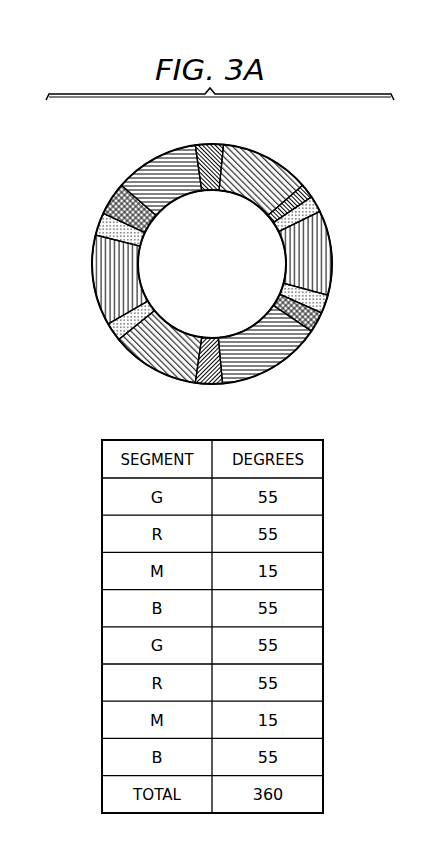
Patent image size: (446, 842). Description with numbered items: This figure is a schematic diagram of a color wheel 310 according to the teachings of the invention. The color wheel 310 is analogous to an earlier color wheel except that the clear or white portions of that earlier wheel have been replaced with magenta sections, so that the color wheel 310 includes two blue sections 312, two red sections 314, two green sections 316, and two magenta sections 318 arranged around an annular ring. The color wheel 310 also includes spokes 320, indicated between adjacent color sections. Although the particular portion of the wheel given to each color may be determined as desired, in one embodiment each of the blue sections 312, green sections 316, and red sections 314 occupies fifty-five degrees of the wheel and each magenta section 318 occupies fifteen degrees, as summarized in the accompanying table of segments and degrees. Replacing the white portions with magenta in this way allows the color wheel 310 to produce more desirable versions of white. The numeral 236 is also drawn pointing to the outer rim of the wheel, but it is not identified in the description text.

The color wheel 310 is at (221, 275).
The blue sections 312 is at (160, 167).
The red sections 314 is at (331, 252).
The green sections 316 is at (268, 168).
The magenta sections 318 is at (100, 209).
The spokes 320 is at (312, 178).
The color wheel outer rim 236 is at (310, 351).